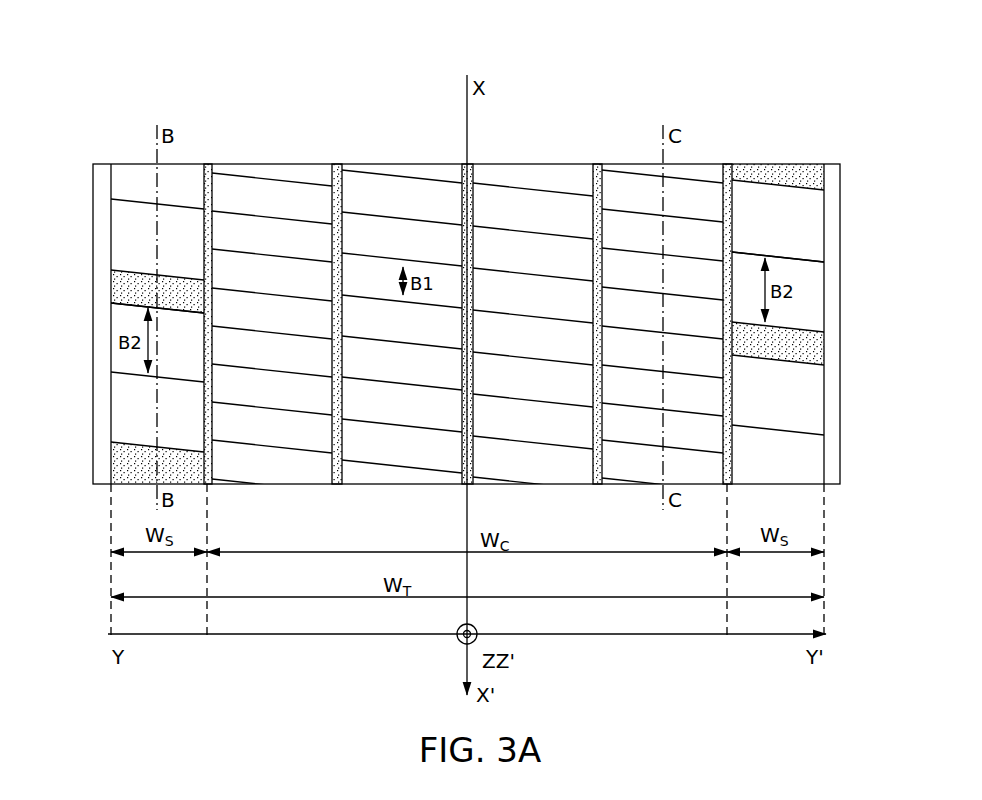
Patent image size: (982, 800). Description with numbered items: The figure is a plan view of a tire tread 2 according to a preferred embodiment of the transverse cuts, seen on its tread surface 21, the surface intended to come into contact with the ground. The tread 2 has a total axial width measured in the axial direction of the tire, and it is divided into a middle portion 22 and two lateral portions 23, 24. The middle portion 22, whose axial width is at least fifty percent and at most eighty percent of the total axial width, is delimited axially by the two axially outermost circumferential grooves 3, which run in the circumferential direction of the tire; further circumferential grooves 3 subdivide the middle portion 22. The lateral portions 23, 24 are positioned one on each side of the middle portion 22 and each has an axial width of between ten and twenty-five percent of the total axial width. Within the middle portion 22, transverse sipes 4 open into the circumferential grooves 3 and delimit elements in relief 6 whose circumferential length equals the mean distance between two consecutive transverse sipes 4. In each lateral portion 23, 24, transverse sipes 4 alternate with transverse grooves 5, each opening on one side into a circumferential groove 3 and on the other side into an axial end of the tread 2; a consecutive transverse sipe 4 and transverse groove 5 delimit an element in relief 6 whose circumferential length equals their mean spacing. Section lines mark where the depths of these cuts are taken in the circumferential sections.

The tread 2 is at (160, 107).
The circumferential groove 3 is at (207, 162).
The transverse sipe 4 is at (378, 258).
The transverse groove 5 is at (143, 278).
The element in relief 6 is at (125, 313).
The tread surface 21 is at (256, 190).
The middle portion 22 is at (270, 162).
The lateral portion 23 is at (143, 163).
The lateral portion 24 is at (790, 172).